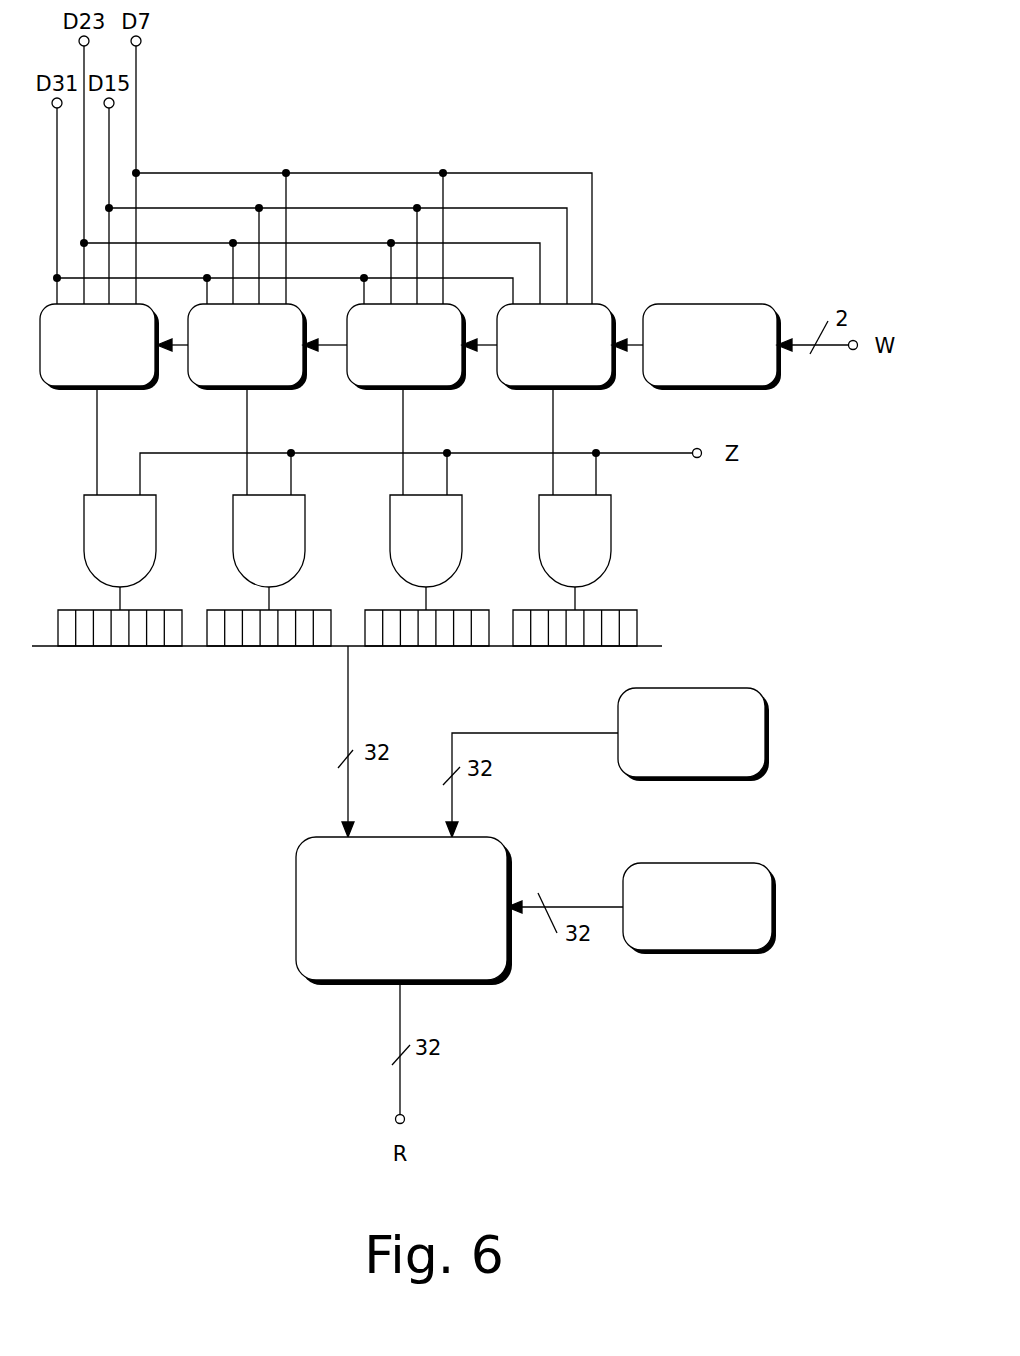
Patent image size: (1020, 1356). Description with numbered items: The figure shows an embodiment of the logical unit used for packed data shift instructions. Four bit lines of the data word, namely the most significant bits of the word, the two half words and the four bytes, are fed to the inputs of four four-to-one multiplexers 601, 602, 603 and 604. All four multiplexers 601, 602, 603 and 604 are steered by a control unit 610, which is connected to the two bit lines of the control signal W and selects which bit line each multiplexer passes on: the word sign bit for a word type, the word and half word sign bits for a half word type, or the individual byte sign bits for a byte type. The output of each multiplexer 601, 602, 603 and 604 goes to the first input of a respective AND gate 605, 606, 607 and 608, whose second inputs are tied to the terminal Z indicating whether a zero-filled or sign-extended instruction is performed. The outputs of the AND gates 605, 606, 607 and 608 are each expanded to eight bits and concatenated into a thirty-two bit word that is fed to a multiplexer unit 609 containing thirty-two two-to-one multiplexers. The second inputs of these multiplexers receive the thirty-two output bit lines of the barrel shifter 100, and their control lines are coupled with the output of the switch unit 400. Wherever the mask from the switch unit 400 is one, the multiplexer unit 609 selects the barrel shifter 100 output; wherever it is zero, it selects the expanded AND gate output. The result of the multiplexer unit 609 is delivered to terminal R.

The 4×1 multiplexer 601 is at (88, 376).
The 4×1 multiplexer 602 is at (236, 376).
The 4×1 multiplexer 603 is at (393, 376).
The 4×1 multiplexer 604 is at (544, 376).
The AND gate 605 is at (110, 558).
The AND gate 606 is at (259, 558).
The AND gate 607 is at (416, 558).
The AND gate 608 is at (566, 558).
The multiplexer unit 609 is at (312, 888).
The control unit 610 is at (707, 313).
The barrel shifter 100 is at (693, 734).
The switch unit 400 is at (699, 908).